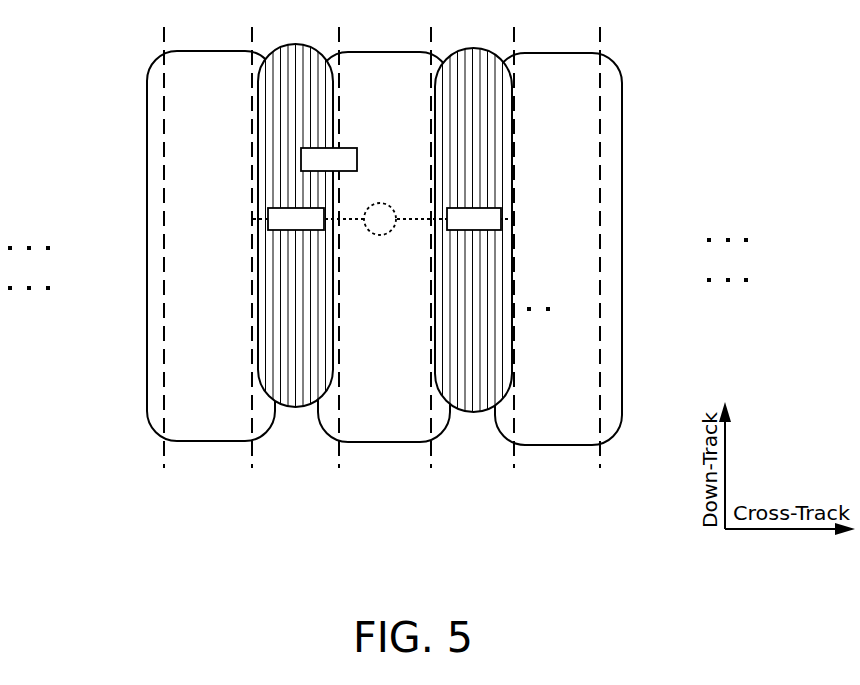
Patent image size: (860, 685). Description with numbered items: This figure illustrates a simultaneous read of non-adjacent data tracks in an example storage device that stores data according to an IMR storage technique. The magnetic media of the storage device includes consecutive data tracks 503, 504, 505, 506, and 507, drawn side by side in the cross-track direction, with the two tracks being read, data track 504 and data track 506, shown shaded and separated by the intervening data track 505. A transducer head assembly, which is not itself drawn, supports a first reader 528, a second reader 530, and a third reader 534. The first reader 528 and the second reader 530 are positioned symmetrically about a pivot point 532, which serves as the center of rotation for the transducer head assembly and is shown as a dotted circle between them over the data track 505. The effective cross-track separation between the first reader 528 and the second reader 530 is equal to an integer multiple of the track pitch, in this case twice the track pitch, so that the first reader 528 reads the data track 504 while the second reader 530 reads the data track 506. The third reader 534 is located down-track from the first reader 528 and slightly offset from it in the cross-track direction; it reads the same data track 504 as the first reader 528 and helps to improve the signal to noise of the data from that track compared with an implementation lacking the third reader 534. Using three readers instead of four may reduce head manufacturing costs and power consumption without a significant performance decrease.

The data track 503 is at (190, 101).
The data track 504 is at (278, 101).
The data track 505 is at (366, 101).
The data track 506 is at (455, 101).
The data track 507 is at (544, 101).
The first reader 528 is at (296, 220).
The second reader 530 is at (474, 220).
The pivot point 532 is at (382, 233).
The third reader 534 is at (329, 160).